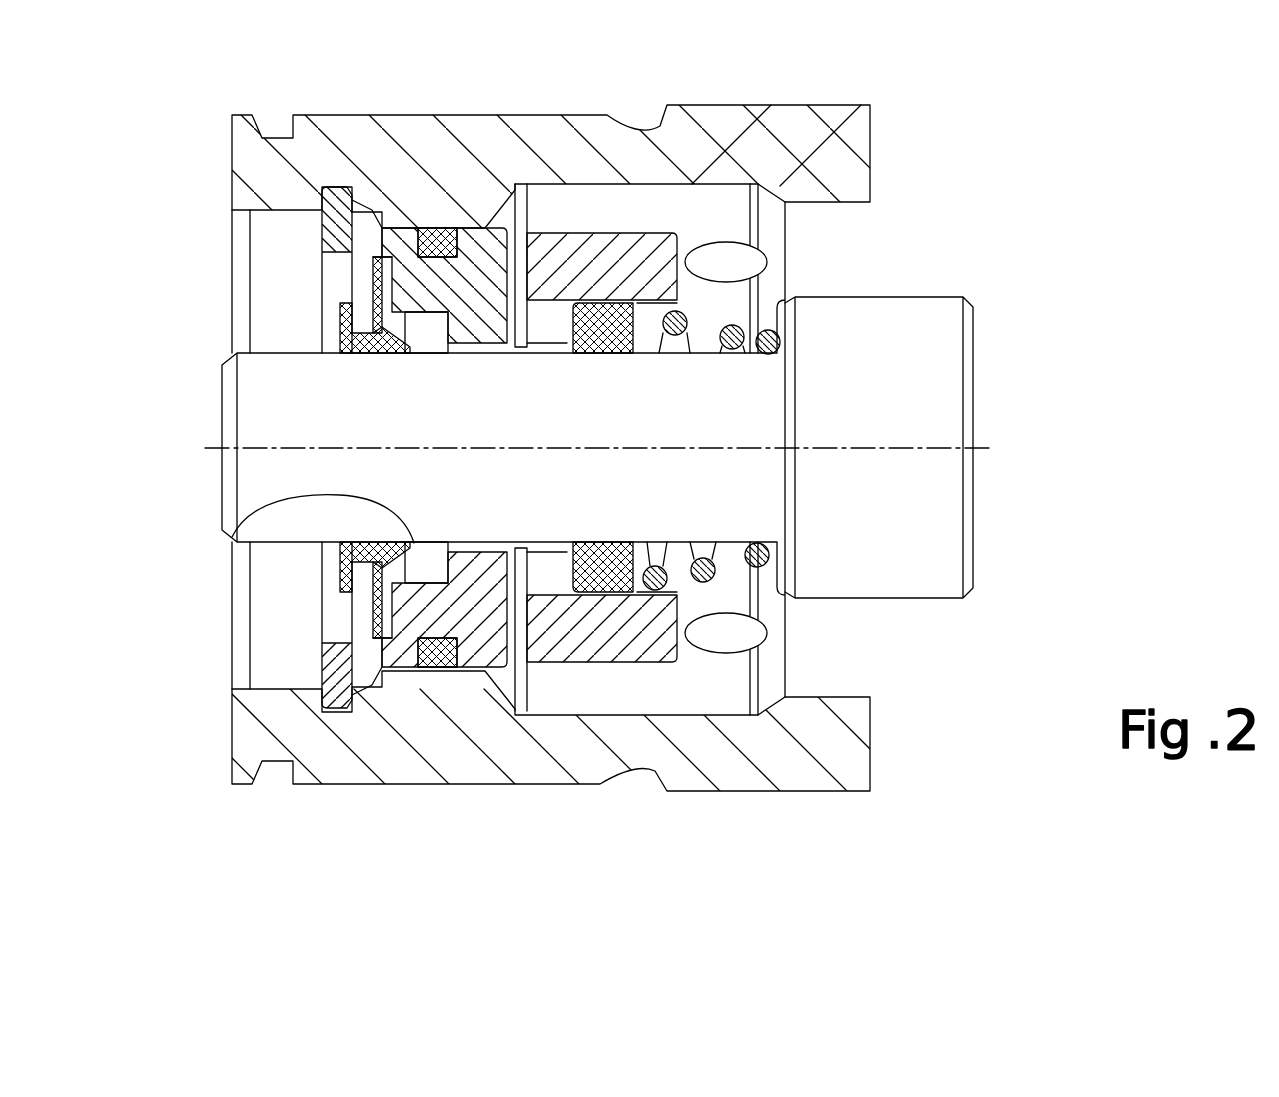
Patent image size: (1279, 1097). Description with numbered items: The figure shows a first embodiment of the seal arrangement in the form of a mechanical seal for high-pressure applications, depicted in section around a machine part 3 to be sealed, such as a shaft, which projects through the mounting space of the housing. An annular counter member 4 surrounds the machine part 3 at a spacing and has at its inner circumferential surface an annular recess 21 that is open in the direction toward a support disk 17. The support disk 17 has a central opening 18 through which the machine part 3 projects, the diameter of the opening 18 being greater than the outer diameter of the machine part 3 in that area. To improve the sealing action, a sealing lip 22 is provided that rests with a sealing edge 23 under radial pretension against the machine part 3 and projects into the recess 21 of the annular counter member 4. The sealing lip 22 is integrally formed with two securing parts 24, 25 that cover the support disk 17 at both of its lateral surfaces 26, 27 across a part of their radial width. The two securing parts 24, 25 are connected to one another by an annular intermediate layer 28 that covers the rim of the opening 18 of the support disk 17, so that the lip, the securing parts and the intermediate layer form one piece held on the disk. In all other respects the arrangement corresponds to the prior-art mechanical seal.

The machine part 3 is at (275, 458).
The annular counter member 4 is at (480, 612).
The support disk 17 is at (322, 187).
The central opening 18 is at (320, 552).
The annular recess 21 is at (360, 602).
The sealing lip 22 is at (380, 346).
The sealing edge 23 is at (222, 533).
The securing part 24 is at (345, 310).
The securing part 25 is at (357, 262).
The lateral surface 26 is at (345, 263).
The lateral surface 27 is at (522, 194).
The annular intermediate layer 28 is at (350, 320).